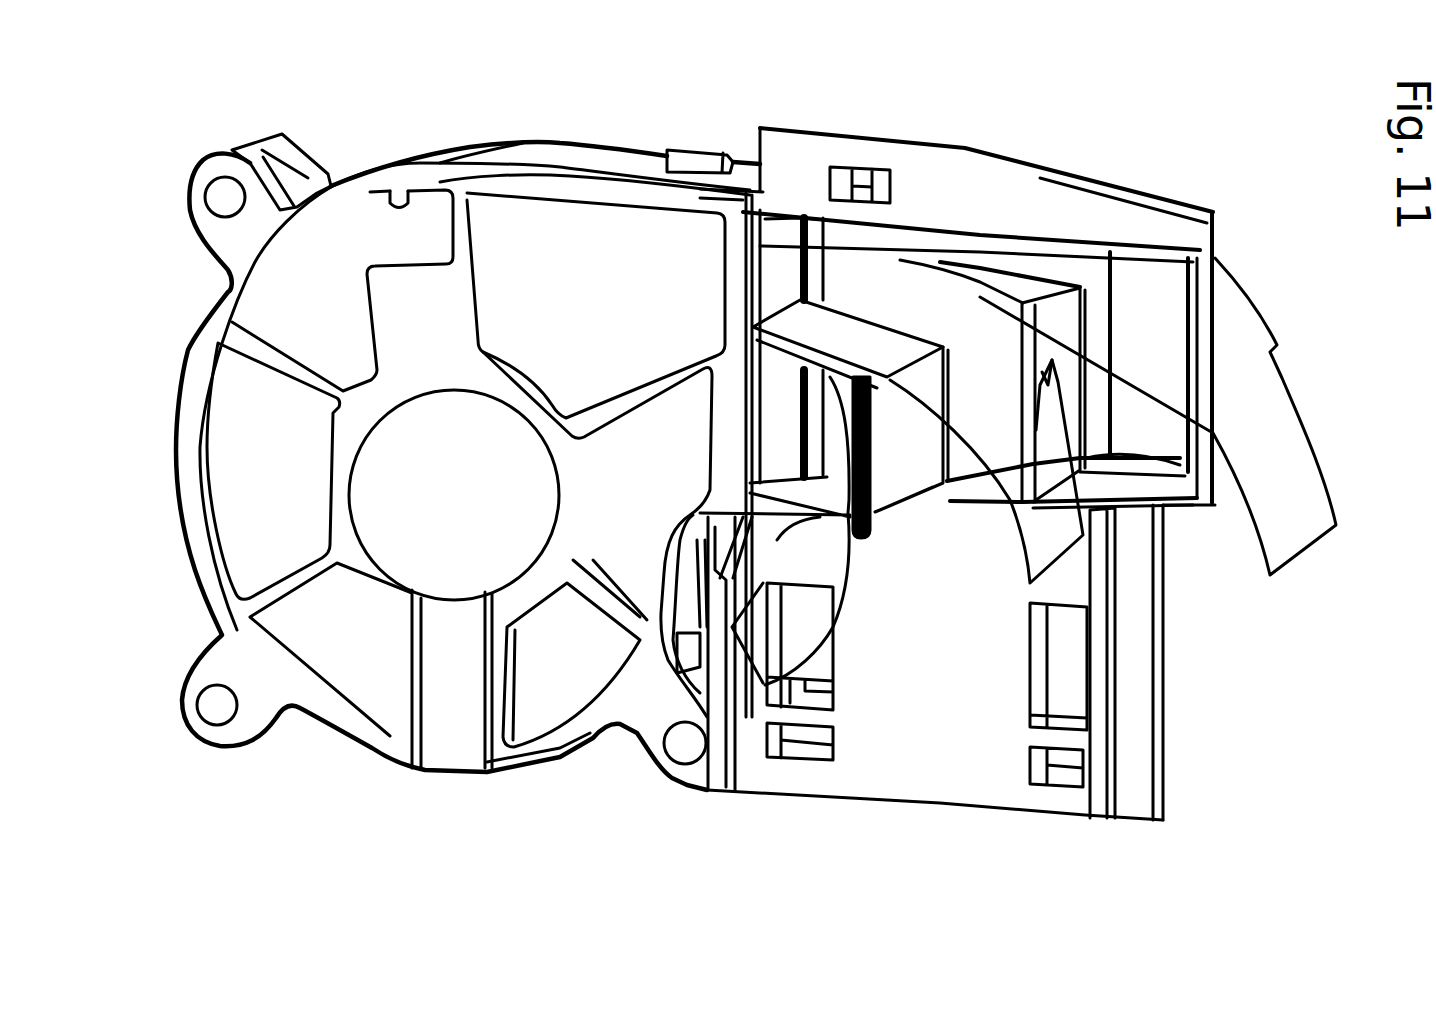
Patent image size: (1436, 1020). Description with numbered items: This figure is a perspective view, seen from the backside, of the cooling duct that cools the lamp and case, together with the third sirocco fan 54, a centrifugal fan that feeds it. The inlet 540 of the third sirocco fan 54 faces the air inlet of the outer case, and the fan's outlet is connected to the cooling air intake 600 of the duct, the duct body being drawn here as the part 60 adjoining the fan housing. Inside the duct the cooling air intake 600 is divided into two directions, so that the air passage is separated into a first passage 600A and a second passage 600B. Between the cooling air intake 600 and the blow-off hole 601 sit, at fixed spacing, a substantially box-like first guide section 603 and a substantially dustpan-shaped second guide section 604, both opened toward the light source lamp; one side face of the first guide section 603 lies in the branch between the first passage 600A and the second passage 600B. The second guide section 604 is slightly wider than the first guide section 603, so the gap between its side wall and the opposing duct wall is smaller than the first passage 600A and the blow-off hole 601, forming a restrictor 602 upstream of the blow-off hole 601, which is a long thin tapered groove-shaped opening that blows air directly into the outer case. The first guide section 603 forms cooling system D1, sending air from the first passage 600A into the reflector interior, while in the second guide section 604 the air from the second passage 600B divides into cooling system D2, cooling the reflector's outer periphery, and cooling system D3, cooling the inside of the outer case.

The third sirocco fan 54 is at (557, 155).
The inlet 540 is at (401, 192).
The duct bracket body 60 is at (937, 140).
The cooling air intake 600 is at (720, 398).
The first passage 600A is at (800, 403).
The second passage 600B is at (805, 282).
The blow-off hole 601 is at (1220, 270).
The restrictor 602 is at (1013, 252).
The first guide section 603 is at (897, 465).
The second guide section 604 is at (1072, 300).
The cooling system D1 is at (804, 531).
The cooling system D2 is at (986, 475).
The cooling system D3 is at (1172, 425).